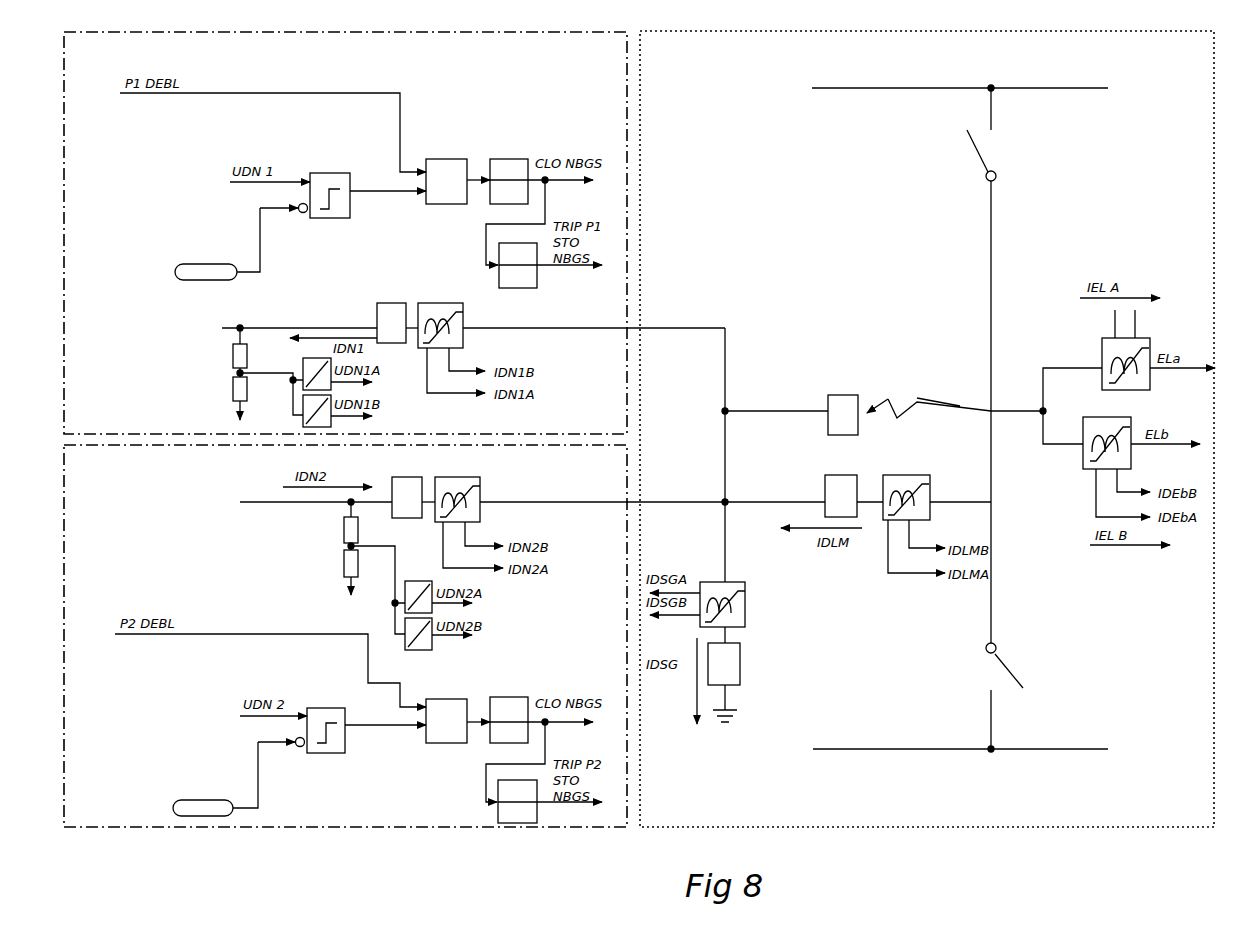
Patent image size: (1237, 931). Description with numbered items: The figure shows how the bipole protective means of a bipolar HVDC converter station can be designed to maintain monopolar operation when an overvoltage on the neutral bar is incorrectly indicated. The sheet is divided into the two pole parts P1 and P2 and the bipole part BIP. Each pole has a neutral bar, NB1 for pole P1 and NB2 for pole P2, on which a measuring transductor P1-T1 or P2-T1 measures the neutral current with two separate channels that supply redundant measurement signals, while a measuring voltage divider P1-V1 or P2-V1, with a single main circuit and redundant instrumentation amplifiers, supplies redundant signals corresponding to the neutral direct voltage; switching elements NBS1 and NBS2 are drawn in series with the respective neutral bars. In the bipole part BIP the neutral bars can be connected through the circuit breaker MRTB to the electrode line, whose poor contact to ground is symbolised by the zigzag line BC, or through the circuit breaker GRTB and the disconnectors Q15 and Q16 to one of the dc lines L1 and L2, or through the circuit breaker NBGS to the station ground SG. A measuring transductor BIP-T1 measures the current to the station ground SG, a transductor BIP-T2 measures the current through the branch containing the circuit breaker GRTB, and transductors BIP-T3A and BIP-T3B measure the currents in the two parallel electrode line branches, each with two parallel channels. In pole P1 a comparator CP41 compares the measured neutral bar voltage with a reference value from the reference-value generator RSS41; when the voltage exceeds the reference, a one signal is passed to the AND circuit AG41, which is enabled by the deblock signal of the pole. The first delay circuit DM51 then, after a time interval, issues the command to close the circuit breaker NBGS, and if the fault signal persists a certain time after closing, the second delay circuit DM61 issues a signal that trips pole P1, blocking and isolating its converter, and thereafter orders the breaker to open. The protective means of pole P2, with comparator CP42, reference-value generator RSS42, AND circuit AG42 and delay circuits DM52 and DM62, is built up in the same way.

The pole part P1 is at (345, 233).
The pole part P2 is at (345, 636).
The bipole part BIP is at (927, 429).
The comparator CP41 is at (324, 171).
The comparator CP42 is at (336, 760).
The AND circuit AG41 is at (447, 158).
The AND gate AG42 is at (442, 745).
The first delay circuit DM51 is at (512, 158).
The delay member DM52 is at (512, 697).
The second delay circuit DM61 is at (545, 290).
The delay member DM62 is at (495, 816).
The reference-value generator RSS41 is at (188, 281).
The reference signal source RSS42 is at (172, 812).
The neutral bus switch NBS1 is at (389, 314).
The neutral bus switch NBS2 is at (405, 488).
The measuring transductor P1-T1 is at (451, 339).
The current transformer P2-T1 is at (469, 513).
The measuring voltage divider P1-V1 is at (217, 377).
The voltage divider P2-V1 is at (356, 558).
The neutral bar NB1 is at (594, 319).
The neutral bar NB2 is at (735, 493).
The line L1 is at (960, 74).
The line L2 is at (960, 765).
The disconnector Q15 is at (987, 365).
The disconnector Q16 is at (999, 696).
The circuit breaker MRTB is at (792, 405).
The circuit breaker GRTB is at (838, 486).
The zigzag line BC is at (890, 397).
The measuring transductor BIP-T1 is at (720, 604).
The measuring transductor BIP-T2 is at (914, 514).
The measuring transductor BIP-T3A is at (1122, 360).
The measuring transductor BIP-T3B is at (1106, 464).
The circuit breaker NBGS is at (746, 656).
The station ground SG is at (738, 705).